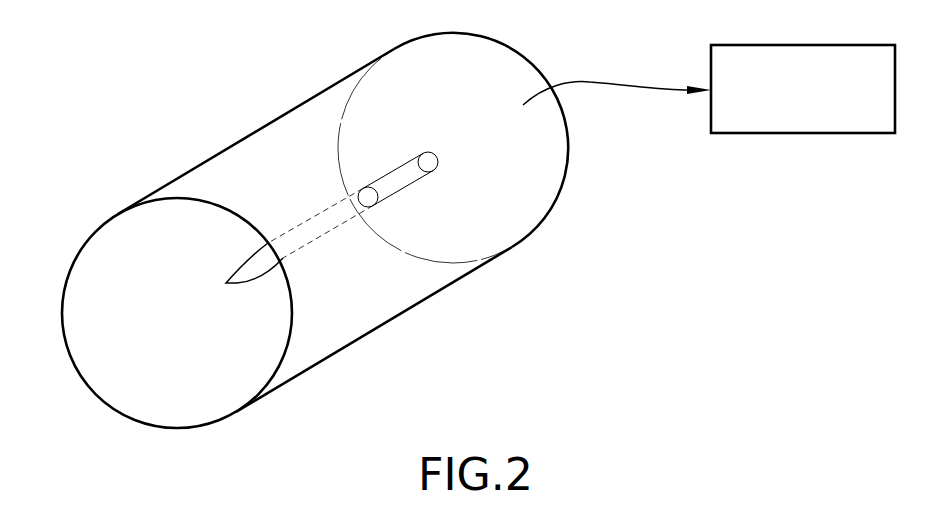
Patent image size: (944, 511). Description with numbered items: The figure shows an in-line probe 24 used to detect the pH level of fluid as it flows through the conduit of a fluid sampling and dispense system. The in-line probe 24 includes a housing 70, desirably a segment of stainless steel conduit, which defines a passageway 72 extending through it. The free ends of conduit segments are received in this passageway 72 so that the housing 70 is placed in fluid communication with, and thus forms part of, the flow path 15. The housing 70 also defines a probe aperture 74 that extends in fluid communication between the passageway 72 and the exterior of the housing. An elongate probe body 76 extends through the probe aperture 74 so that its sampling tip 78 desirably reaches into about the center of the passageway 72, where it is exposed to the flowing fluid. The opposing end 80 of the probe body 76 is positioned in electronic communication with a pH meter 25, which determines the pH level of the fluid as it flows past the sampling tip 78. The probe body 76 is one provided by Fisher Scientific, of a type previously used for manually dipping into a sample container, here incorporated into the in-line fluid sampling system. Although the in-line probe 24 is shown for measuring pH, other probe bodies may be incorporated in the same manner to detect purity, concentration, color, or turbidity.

The in-line probe 24 is at (226, 57).
The passageway 72 is at (181, 262).
The flow path 15 is at (181, 332).
The sampling tip 78 is at (232, 283).
The probe body 76 is at (389, 157).
The probe aperture 74 is at (368, 207).
The opposing end 80 is at (425, 175).
The housing 70 is at (433, 292).
The pH meter 25 is at (768, 133).